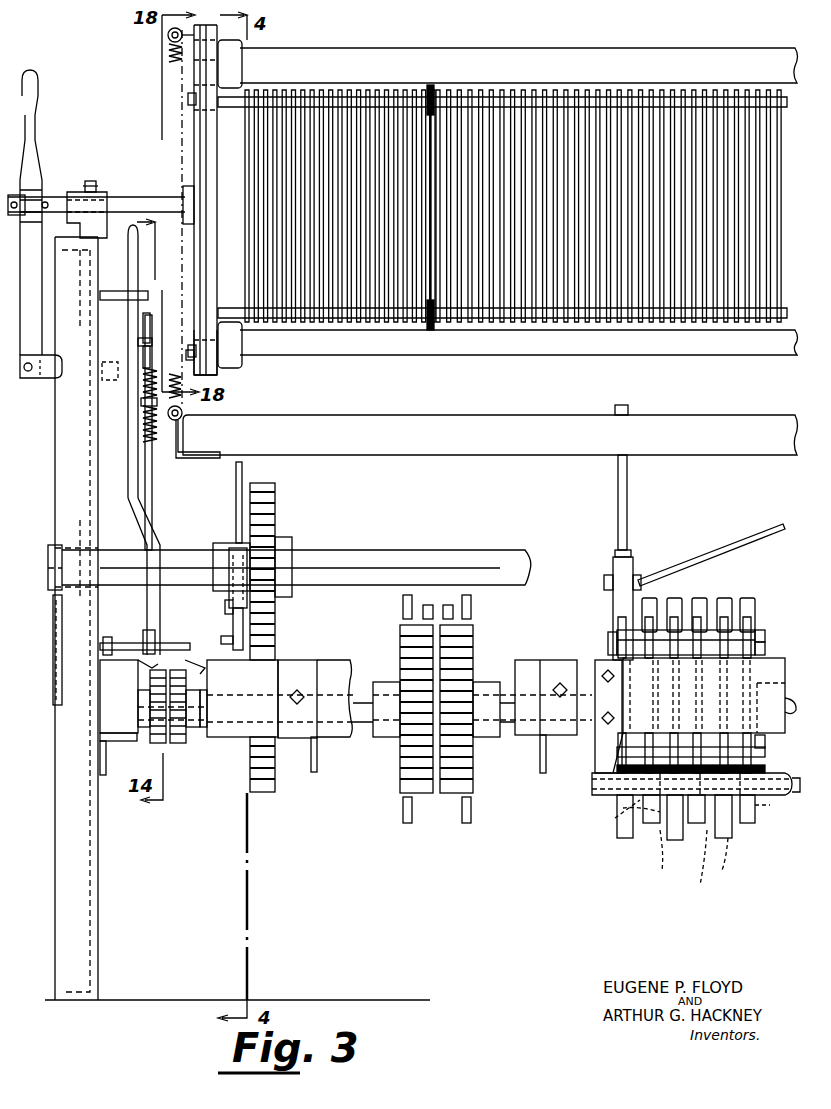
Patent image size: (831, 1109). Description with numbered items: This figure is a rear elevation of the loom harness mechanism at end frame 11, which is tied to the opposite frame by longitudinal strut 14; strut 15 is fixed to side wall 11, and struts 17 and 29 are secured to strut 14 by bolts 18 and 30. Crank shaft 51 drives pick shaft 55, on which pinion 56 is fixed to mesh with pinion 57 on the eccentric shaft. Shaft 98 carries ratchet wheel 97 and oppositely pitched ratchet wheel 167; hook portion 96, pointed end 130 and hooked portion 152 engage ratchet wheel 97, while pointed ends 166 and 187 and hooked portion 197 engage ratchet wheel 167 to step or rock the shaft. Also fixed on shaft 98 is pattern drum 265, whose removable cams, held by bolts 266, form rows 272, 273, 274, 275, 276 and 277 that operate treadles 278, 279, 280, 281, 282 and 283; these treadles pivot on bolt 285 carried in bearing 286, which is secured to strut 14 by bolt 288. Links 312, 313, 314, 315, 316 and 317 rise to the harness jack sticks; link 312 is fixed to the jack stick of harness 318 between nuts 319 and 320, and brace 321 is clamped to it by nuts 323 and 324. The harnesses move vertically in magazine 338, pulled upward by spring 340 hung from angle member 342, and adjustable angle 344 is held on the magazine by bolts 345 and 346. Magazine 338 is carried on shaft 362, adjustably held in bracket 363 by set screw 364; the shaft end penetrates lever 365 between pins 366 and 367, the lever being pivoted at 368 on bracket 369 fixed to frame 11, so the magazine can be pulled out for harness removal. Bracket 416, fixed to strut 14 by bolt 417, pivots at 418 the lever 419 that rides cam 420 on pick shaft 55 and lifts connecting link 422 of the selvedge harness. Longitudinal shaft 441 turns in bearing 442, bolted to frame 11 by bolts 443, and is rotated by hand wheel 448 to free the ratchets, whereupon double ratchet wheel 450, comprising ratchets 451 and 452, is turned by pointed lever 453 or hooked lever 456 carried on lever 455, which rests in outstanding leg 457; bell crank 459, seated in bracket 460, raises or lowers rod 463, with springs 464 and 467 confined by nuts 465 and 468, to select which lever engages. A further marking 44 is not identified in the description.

The end frame 11 is at (55, 836).
The strut 14 is at (344, 668).
The strut 15 is at (100, 753).
The strut 17 is at (311, 772).
The bolt 18 is at (300, 688).
The strut 29 is at (540, 773).
The bolt 30 is at (546, 697).
The rod 44 is at (139, 361).
The crank shaft 51 is at (102, 370).
The pick shaft 55 is at (386, 556).
The pinion 56 is at (278, 500).
The pinion 57 is at (278, 658).
The hook portion 96 is at (403, 601).
The ratchet wheel 97 is at (400, 768).
The shaft 98 is at (205, 740).
The pointed end 130 is at (403, 810).
The hooked portion 152 is at (428, 605).
The pointed end 166 is at (448, 605).
The ratchet wheel 167 is at (473, 763).
The pointed end 187 is at (471, 601).
The hooked portion 197 is at (471, 812).
The pattern drum 265 is at (765, 630).
The bolts 266 is at (765, 644).
The row of cams 272 is at (623, 808).
The row of cams 273 is at (610, 815).
The row of cams 274 is at (660, 868).
The row of cams 275 is at (717, 860).
The row of cams 276 is at (750, 818).
The row of cams 277 is at (778, 802).
The treadle 278 is at (620, 838).
The treadle 279 is at (650, 823).
The treadle 280 is at (696, 823).
The treadle 281 is at (675, 840).
The treadle 282 is at (742, 858).
The treadle 283 is at (723, 838).
The bolt 285 is at (592, 784).
The bearing 286 is at (600, 760).
The bolt 288 is at (607, 697).
The link 312 is at (613, 601).
The link 313 is at (650, 598).
The link 314 is at (675, 598).
The link 315 is at (700, 598).
The link 316 is at (725, 598).
The link 317 is at (748, 604).
The harness 318 is at (488, 38).
The nut 319 is at (627, 460).
The nut 320 is at (628, 410).
The brace 321 is at (722, 550).
The nut 323 is at (640, 575).
The nut 324 is at (606, 575).
The magazine 338 is at (194, 84).
The spring 340 is at (169, 58).
The angle member 342 is at (168, 38).
The adjustable angle 344 is at (217, 375).
The bolt 345 is at (188, 100).
The bolt 346 is at (229, 345).
The shaft 362 is at (140, 192).
The bracket 363 is at (91, 216).
The set screw 364 is at (88, 181).
The lever 365 is at (36, 100).
The pin 366 is at (46, 202).
The pin 367 is at (14, 195).
The pivot 368 is at (30, 372).
The bracket 369 is at (48, 378).
The bracket 416 is at (221, 640).
The bolt 417 is at (225, 612).
The pivot 418 is at (229, 600).
The lever 419 is at (242, 698).
The cam 420 is at (222, 543).
The connecting link 422 is at (236, 494).
The longitudinal shaft 441 is at (138, 643).
The bearing 442 is at (107, 637).
The bolts 443 is at (143, 650).
The hand wheel 448 is at (53, 668).
The ratchet wheel 450 is at (168, 750).
The ratchet 451 is at (182, 745).
The ratchet 452 is at (152, 745).
The pointed lever 453 is at (172, 701).
The lever 455 is at (142, 534).
The hooked lever 456 is at (142, 676).
The outstanding leg 457 is at (100, 296).
The bell crank 459 is at (143, 322).
The bracket 460 is at (138, 342).
The rod 463 is at (152, 476).
The spring 464 is at (143, 390).
The nut 465 is at (143, 364).
The spring 467 is at (141, 406).
The nut 468 is at (143, 428).